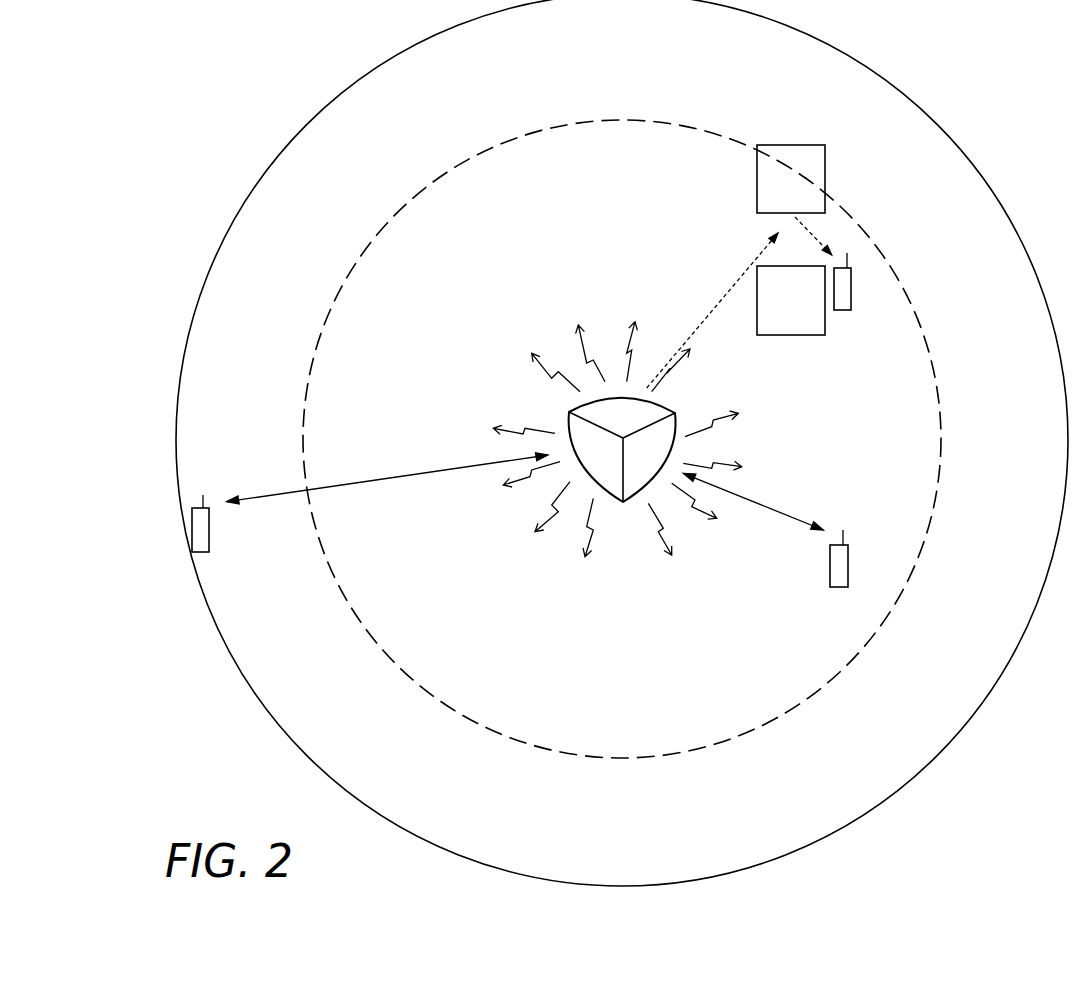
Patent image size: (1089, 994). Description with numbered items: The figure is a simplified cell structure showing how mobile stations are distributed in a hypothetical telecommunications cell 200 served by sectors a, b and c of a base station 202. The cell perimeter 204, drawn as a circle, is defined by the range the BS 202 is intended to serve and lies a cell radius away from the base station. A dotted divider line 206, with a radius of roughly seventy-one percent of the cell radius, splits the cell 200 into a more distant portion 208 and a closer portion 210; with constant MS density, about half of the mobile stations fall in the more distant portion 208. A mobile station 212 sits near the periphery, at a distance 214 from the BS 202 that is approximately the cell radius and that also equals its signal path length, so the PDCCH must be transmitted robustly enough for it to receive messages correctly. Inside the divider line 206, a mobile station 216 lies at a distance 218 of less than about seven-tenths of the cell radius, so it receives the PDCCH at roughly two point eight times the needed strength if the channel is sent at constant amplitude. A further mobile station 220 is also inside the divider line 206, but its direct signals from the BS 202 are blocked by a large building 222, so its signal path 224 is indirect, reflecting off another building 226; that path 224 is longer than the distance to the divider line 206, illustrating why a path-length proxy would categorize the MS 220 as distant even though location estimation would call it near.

The telecommunications cell 200 is at (1026, 84).
The base station 202 is at (567, 410).
The cell perimeter 204 is at (293, 133).
The divider line 206 is at (460, 160).
The more distant portion 208 is at (728, 86).
The closer portion 210 is at (604, 216).
The mobile station 212 is at (209, 533).
The distance 214 is at (323, 486).
The mobile station 216 is at (830, 573).
The distance 218 is at (773, 510).
The mobile station 220 is at (853, 303).
The large building 222 is at (792, 337).
The signal path 224 is at (708, 313).
The building 226 is at (826, 170).